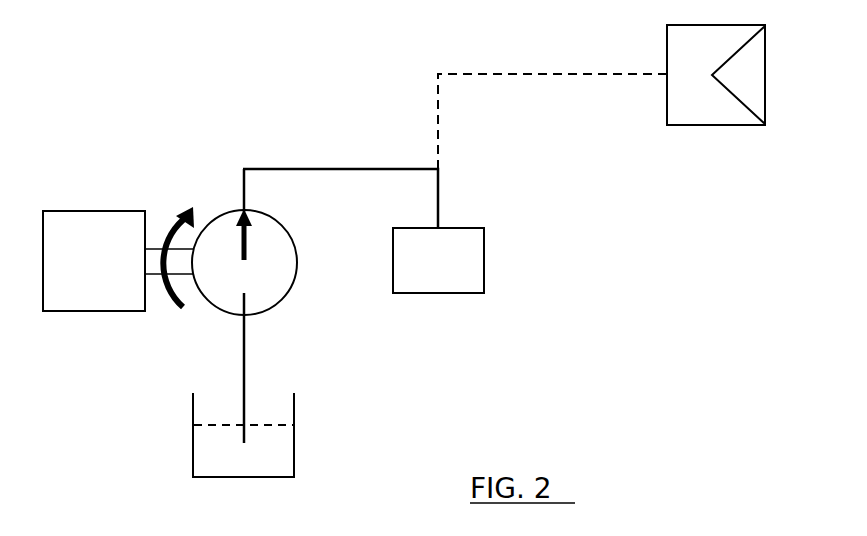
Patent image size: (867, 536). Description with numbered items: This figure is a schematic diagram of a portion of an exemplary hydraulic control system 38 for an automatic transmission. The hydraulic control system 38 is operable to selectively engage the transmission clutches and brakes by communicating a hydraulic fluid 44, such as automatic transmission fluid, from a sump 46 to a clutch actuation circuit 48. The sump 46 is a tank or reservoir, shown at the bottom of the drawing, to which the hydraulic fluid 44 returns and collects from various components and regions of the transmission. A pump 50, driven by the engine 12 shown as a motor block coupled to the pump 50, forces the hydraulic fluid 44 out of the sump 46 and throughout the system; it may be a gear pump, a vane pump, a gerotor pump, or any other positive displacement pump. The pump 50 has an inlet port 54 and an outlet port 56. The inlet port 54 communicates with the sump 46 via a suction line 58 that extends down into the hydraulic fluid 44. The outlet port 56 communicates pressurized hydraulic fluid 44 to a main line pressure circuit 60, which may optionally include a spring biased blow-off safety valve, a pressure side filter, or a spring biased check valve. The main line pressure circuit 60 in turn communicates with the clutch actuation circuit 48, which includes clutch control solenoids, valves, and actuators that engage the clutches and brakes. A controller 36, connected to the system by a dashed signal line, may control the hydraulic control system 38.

The hydraulic control system 38 is at (193, 56).
The engine 12 is at (82, 211).
The pump 50 is at (298, 262).
The outlet port 56 is at (243, 208).
The main line pressure circuit 60 is at (345, 169).
The clutch actuation circuit 48 is at (425, 275).
The controller 36 is at (710, 126).
The inlet port 54 is at (242, 318).
The suction line 58 is at (242, 390).
The hydraulic fluid 44 is at (268, 422).
The sump 46 is at (295, 443).